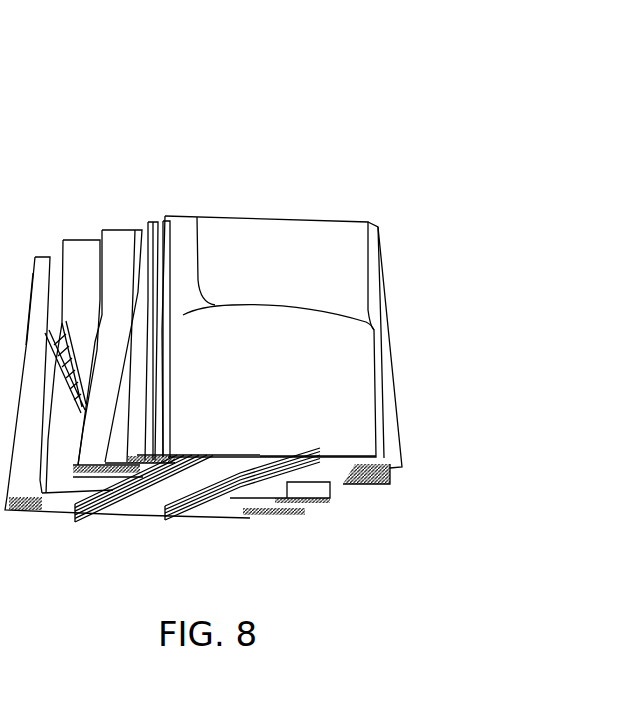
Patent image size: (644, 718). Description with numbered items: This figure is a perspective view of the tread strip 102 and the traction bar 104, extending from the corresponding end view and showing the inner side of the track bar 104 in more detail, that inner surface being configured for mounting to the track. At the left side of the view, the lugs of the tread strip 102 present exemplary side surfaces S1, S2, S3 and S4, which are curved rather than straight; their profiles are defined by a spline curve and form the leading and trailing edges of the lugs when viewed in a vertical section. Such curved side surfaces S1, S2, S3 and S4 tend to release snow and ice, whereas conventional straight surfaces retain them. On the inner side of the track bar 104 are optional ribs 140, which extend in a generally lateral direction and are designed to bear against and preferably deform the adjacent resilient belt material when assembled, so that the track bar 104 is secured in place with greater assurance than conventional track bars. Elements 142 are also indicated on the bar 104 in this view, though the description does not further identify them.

The tread strip 102 is at (475, 118).
The traction bar 104 is at (160, 517).
The ribs 140 is at (82, 518).
The rails 142 is at (188, 465).
The side surface S1 is at (168, 230).
The side surface S2 is at (138, 235).
The side surface S3 is at (103, 248).
The side surface S4 is at (52, 255).